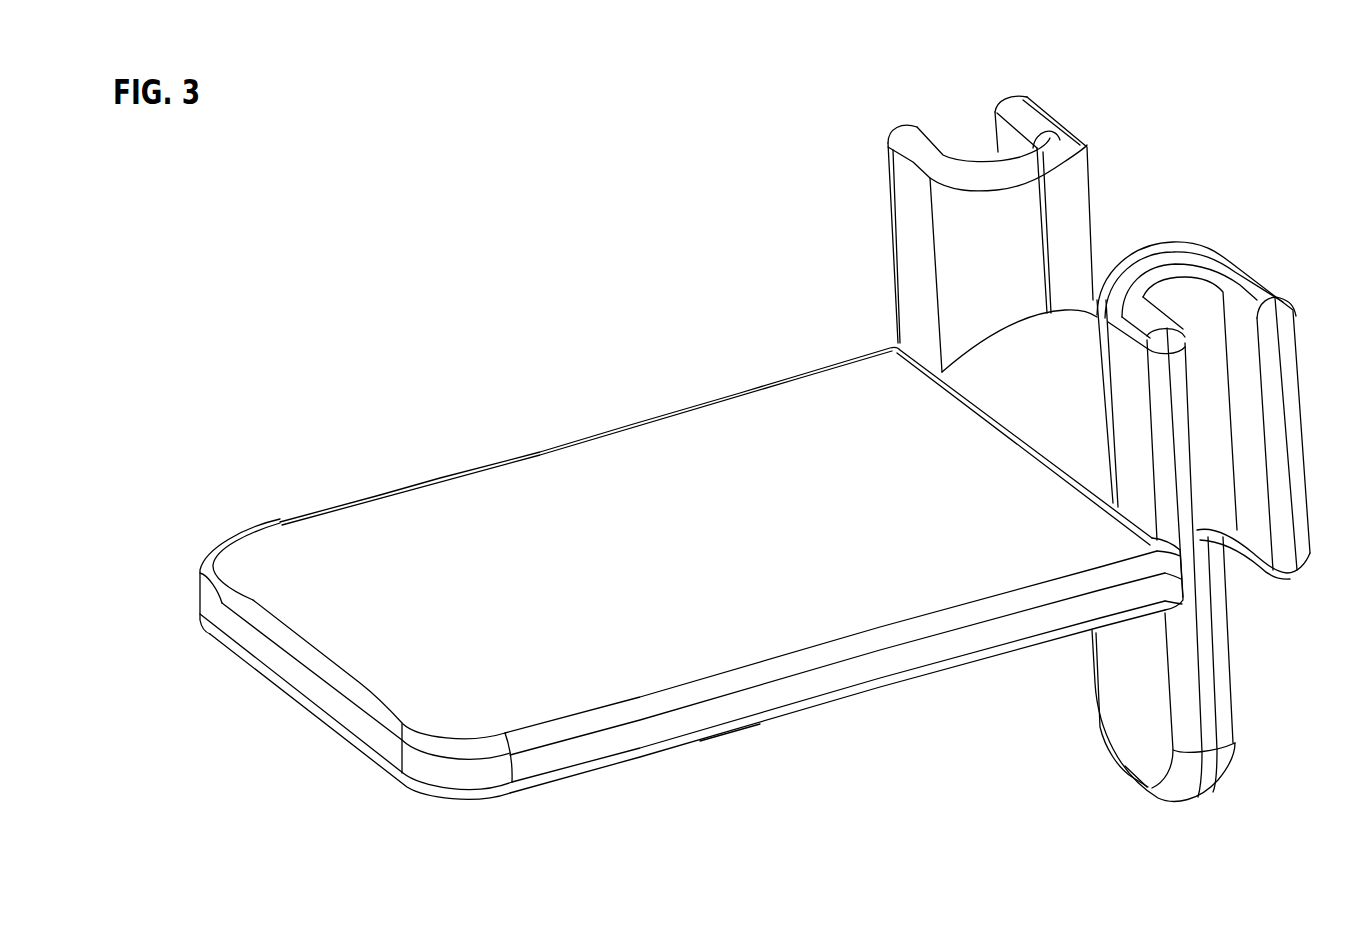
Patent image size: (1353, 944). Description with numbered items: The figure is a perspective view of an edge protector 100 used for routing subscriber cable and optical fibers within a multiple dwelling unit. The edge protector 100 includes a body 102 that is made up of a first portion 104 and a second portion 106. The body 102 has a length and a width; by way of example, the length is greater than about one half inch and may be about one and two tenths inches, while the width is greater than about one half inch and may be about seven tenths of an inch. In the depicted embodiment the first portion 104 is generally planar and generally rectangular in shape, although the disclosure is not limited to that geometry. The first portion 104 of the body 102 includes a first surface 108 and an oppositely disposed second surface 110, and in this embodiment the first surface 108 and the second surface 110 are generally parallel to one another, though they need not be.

The edge protector 100 is at (682, 321).
The body 102 is at (352, 482).
The first portion 104 is at (510, 398).
The second portion 106 is at (1148, 197).
The first surface 108 is at (748, 537).
The second surface 110 is at (847, 698).